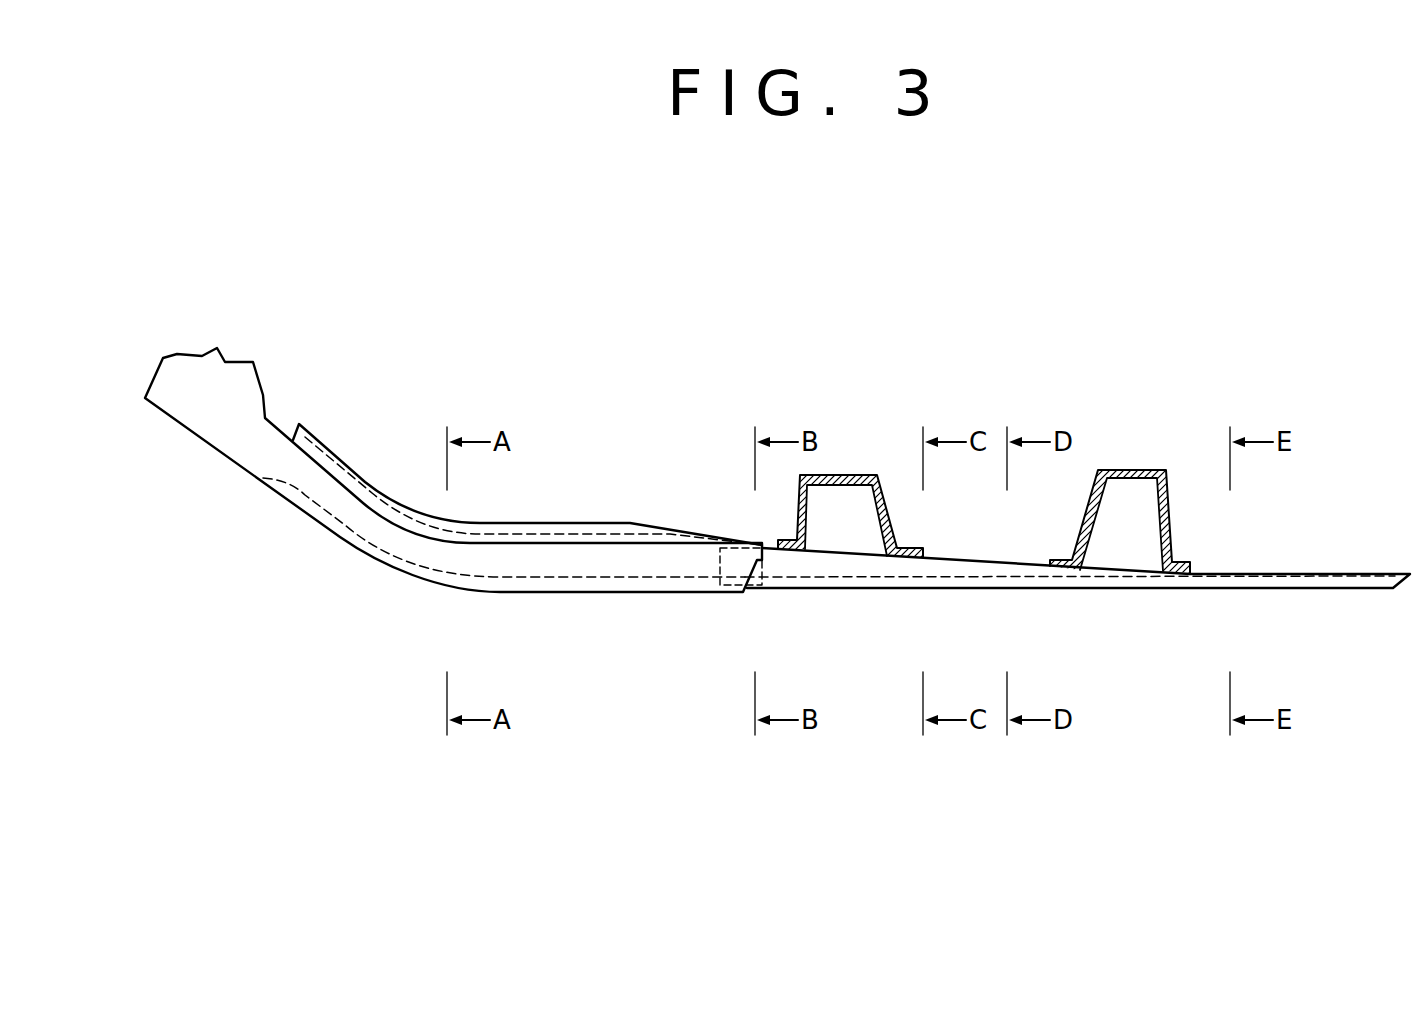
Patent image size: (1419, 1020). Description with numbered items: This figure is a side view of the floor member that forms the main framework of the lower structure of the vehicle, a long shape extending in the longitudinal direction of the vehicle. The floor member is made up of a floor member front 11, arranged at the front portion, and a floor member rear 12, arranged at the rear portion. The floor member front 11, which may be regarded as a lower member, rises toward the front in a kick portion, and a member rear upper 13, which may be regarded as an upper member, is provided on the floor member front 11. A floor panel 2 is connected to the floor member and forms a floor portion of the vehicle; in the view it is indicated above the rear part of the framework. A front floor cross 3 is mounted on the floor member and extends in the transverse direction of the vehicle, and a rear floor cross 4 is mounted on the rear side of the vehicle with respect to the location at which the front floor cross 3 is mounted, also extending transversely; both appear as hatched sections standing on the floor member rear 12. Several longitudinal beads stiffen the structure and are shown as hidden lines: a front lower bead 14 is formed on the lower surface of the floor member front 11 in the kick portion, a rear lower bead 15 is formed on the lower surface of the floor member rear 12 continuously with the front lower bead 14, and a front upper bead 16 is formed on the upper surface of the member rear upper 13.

The floor panel 2 is at (850, 432).
The front floor cross 3 is at (893, 520).
The rear floor cross 4 is at (1137, 468).
The floor member front 11 is at (240, 445).
The floor member rear 12 is at (1210, 580).
The member rear upper 13 is at (348, 463).
The front lower bead 14 is at (520, 577).
The rear lower bead 15 is at (978, 577).
The front upper bead 16 is at (553, 533).